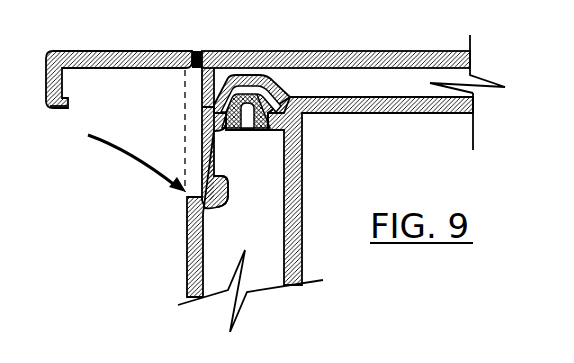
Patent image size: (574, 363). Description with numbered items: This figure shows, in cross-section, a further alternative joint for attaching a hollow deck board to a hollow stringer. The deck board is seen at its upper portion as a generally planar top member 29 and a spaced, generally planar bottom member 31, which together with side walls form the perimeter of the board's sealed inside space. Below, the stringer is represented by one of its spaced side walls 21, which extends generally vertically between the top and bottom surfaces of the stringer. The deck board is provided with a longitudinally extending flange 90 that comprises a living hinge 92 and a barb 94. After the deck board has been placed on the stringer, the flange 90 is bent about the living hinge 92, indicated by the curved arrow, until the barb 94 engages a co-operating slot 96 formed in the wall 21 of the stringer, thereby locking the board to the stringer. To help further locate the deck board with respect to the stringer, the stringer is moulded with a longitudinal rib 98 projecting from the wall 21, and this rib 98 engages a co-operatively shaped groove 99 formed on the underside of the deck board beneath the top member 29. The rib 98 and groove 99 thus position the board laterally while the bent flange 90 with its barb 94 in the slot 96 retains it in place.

The side wall 21 is at (187, 260).
The top member 29 is at (405, 51).
The bottom member 31 is at (450, 115).
The longitudinally extending flange 90 is at (115, 51).
The living hinge 92 is at (193, 51).
The barb 94 is at (47, 103).
The slot 96 is at (187, 200).
The longitudinal rib 98 is at (255, 51).
The groove 99 is at (280, 80).